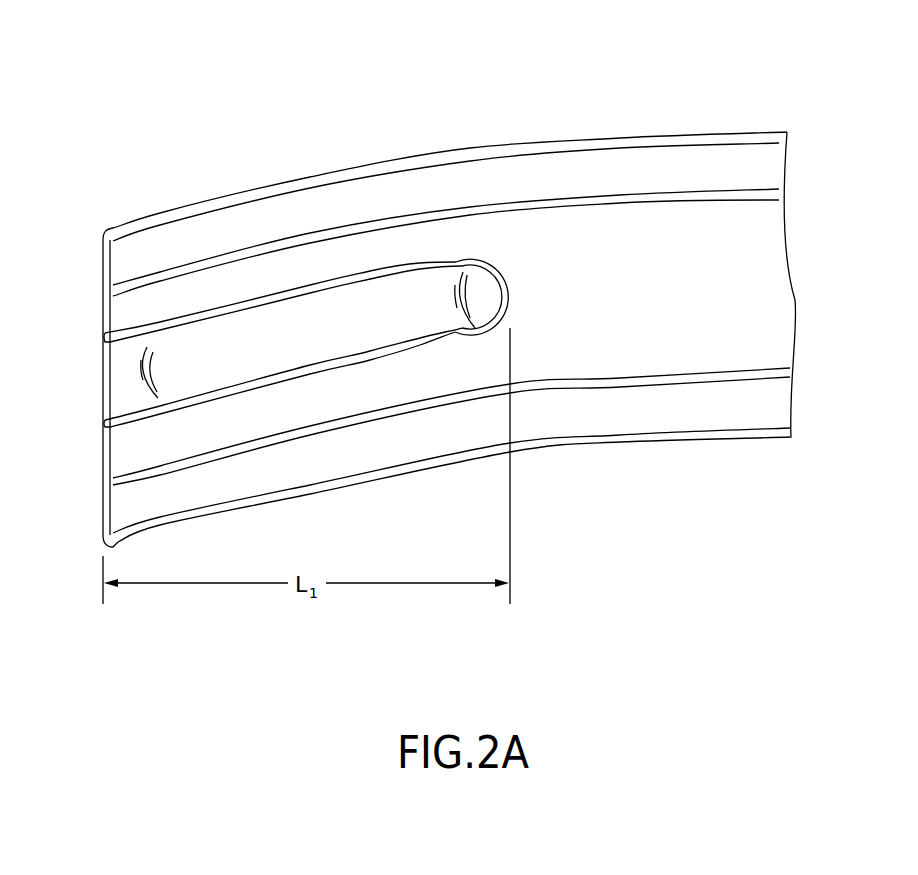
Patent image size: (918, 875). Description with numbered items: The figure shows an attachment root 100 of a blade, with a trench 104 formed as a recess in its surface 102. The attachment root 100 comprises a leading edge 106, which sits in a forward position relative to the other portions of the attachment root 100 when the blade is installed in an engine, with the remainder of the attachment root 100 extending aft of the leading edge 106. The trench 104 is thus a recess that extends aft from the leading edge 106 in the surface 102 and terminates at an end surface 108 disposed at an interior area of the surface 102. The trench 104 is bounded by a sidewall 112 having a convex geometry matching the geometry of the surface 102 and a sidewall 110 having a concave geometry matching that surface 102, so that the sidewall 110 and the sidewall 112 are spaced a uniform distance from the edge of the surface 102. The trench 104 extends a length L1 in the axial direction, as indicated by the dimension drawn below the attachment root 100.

The attachment root 100 is at (208, 100).
The surface 102 is at (428, 233).
The trench 104 is at (365, 297).
The leading edge 106 is at (103, 373).
The end surface 108 is at (505, 301).
The sidewall 110 is at (340, 354).
The sidewall 112 is at (442, 263).